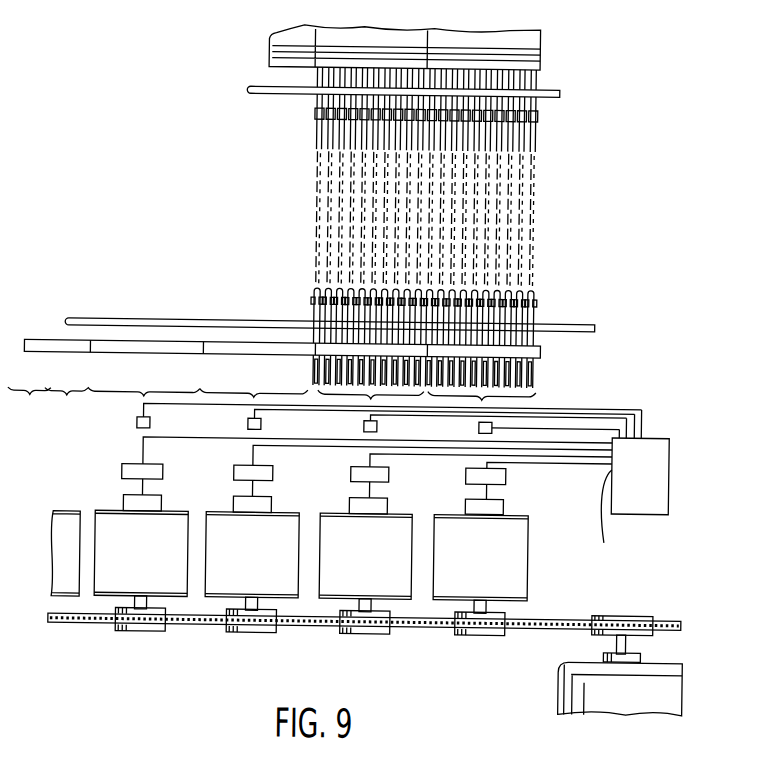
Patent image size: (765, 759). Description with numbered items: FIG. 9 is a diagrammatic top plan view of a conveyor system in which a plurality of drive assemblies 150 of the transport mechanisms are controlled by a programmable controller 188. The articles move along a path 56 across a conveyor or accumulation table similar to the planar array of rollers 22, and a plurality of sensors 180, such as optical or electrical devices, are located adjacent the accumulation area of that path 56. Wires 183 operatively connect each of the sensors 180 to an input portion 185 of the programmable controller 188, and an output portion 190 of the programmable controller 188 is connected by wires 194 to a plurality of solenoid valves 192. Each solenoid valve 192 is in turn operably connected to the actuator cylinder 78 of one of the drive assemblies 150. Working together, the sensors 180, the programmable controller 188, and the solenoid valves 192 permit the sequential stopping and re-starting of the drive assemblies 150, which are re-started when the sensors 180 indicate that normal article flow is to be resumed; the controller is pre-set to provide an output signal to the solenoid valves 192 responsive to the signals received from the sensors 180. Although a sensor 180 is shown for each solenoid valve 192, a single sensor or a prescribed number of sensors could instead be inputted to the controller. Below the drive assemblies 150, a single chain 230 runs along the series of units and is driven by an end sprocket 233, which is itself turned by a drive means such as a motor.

The path 56 is at (537, 189).
The planar array of rollers 22 is at (313, 312).
The actuator cylinder 78 is at (507, 504).
The drive assembly 150 is at (520, 574).
The sensor 180 is at (137, 425).
The wires 183 is at (587, 411).
The input portion 185 is at (650, 435).
The programmable controller 188 is at (670, 503).
The output portion 190 is at (606, 540).
The solenoid valve 192 is at (123, 473).
The wires 194 is at (252, 457).
The chain 230 is at (561, 617).
The end sprocket 233 is at (632, 613).